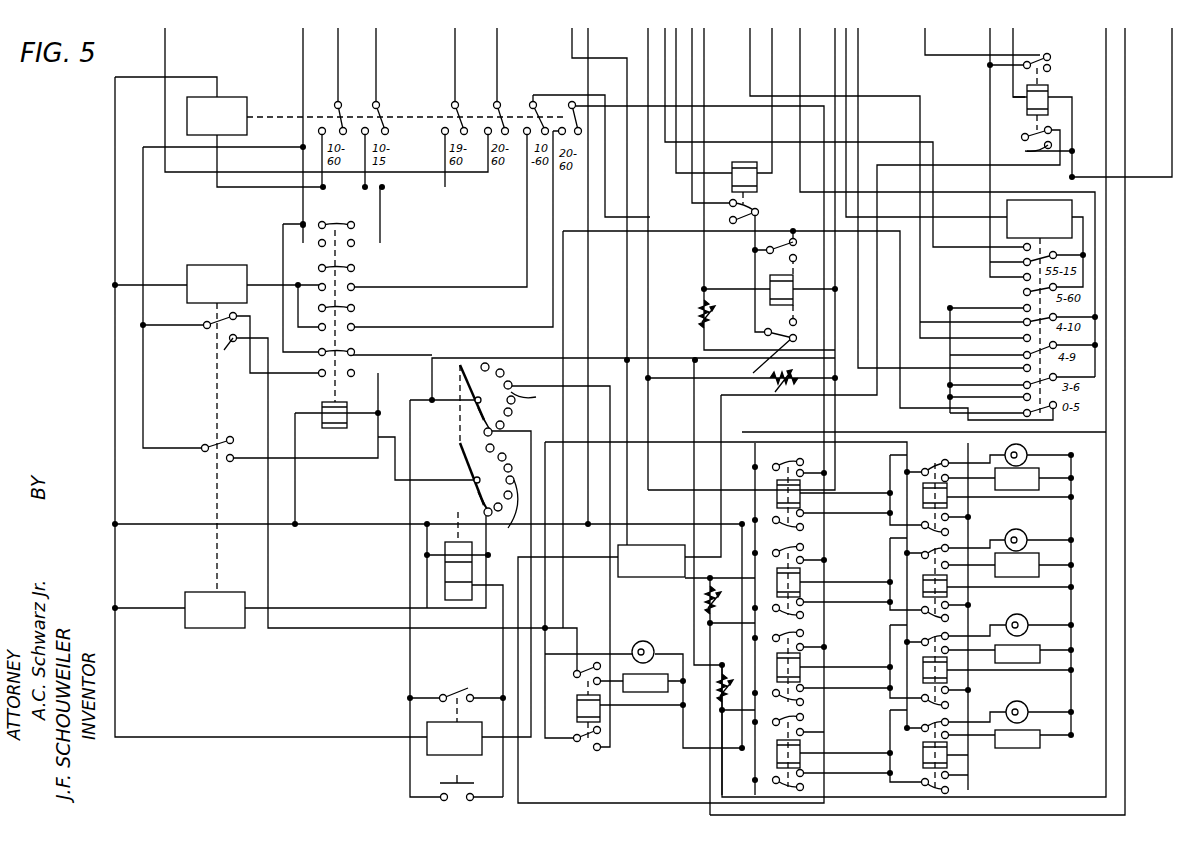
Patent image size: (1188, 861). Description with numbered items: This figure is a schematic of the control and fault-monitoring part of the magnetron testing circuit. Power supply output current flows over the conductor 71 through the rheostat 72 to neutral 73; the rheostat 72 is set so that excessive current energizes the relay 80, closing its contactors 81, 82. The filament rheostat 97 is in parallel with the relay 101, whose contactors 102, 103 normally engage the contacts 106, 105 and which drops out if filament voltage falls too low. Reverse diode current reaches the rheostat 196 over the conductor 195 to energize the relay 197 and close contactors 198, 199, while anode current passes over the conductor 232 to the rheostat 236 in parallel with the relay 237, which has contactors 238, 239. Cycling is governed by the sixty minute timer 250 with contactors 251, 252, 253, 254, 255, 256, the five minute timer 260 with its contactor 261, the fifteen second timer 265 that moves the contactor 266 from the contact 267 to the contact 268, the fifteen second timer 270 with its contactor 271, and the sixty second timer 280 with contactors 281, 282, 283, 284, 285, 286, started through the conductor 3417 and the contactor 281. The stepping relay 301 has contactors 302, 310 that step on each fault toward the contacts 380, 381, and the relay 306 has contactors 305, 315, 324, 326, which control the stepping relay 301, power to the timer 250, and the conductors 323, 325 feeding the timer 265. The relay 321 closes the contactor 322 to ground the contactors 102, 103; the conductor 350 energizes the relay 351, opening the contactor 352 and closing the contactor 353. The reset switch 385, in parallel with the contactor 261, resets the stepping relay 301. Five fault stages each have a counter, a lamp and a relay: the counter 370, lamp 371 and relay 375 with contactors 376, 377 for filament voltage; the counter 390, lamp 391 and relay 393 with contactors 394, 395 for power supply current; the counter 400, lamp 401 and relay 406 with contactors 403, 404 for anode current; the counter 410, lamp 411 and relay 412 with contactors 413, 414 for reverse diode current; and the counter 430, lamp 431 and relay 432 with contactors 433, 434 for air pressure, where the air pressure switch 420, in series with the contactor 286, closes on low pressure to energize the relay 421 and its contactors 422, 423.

The conductor 71 is at (648, 44).
The rheostat 72 is at (785, 382).
The ground or neutral 73 is at (683, 173).
The relay 80 is at (800, 501).
The contactor 81 is at (805, 468).
The contactor 82 is at (805, 527).
The filament rheostat 97 is at (698, 310).
The relay 101 is at (785, 287).
The contactor 102 is at (768, 252).
The contactor 103 is at (792, 335).
The contact 105 is at (760, 368).
The contact 106 is at (788, 243).
The conductor 195 is at (1106, 136).
The rheostat 196 is at (720, 700).
The relay 197 is at (800, 665).
The contactor 198 is at (805, 638).
The contactor 199 is at (805, 701).
The conductor 232 is at (1122, 100).
The rheostat 236 is at (705, 602).
The relay 237 is at (800, 590).
The contactor 238 is at (805, 552).
The contactor 239 is at (805, 613).
The sixty minute timer 250 is at (225, 112).
The contactor 251 is at (323, 107).
The contactor 252 is at (370, 107).
The contactor 253 is at (447, 107).
The contactor 254 is at (491, 107).
The contactor 255 is at (530, 107).
The contactor 256 is at (566, 105).
The five minute timer 260 is at (461, 752).
The contactor 261 is at (462, 690).
The fifteen second timer 265 is at (200, 288).
The contactor 266 is at (210, 330).
The contact 267 is at (233, 320).
The contact 268 is at (226, 348).
The fifteen second timer 270 is at (217, 618).
The contactor 271 is at (218, 446).
The sixty second timer 280 is at (1017, 224).
The contactor 281 is at (1025, 258).
The contactor 282 is at (1025, 290).
The contactor 283 is at (1025, 324).
The contactor 284 is at (1025, 352).
The contactor 285 is at (1025, 382).
The contactor 286 is at (1026, 410).
The stepping relay 301 is at (445, 568).
The contactor 302 is at (478, 483).
The contactor 305 is at (355, 355).
The relay 306 is at (335, 428).
The contactor 310 is at (474, 405).
The contactor 315 is at (355, 230).
The relay 321 is at (752, 186).
The contactor 322 is at (760, 215).
The conductor 323 is at (667, 219).
The contactor 324 is at (355, 272).
The conductor 325 is at (443, 327).
The contactor 326 is at (355, 313).
The conductor 3417 is at (760, 145).
The conductor 350 is at (1168, 63).
The relay 351 is at (1027, 109).
The contactor 352 is at (1038, 52).
The contactor 353 is at (1025, 142).
The counter 370 is at (650, 692).
The lamp 371 is at (646, 636).
The relay 375 is at (580, 712).
The contactor 376 is at (586, 668).
The contactor 377 is at (588, 744).
The contact 380 is at (510, 525).
The contact 381 is at (536, 398).
The reset switch 385 is at (467, 788).
The counter 390 is at (1018, 487).
The indicator lamp 391 is at (1020, 453).
The relay 393 is at (947, 503).
The contactor 394 is at (940, 460).
The contactor 395 is at (950, 532).
The counter 400 is at (1018, 572).
The indicator lamp 401 is at (1022, 547).
The contactor 403 is at (945, 548).
The contactor 404 is at (950, 618).
The relay 406 is at (947, 590).
The counter 410 is at (1014, 655).
The indicator lamp 411 is at (1028, 618).
The relay 412 is at (947, 675).
The contactor 413 is at (950, 640).
The contactor 414 is at (950, 705).
The air pressure switch 420 is at (659, 577).
The relay 421 is at (800, 762).
The contactor 422 is at (805, 732).
The contactor 423 is at (805, 788).
The counter 430 is at (1023, 748).
The indicator lamp 431 is at (1030, 702).
The relay 432 is at (947, 760).
The contactor 433 is at (950, 725).
The contactor 434 is at (950, 790).